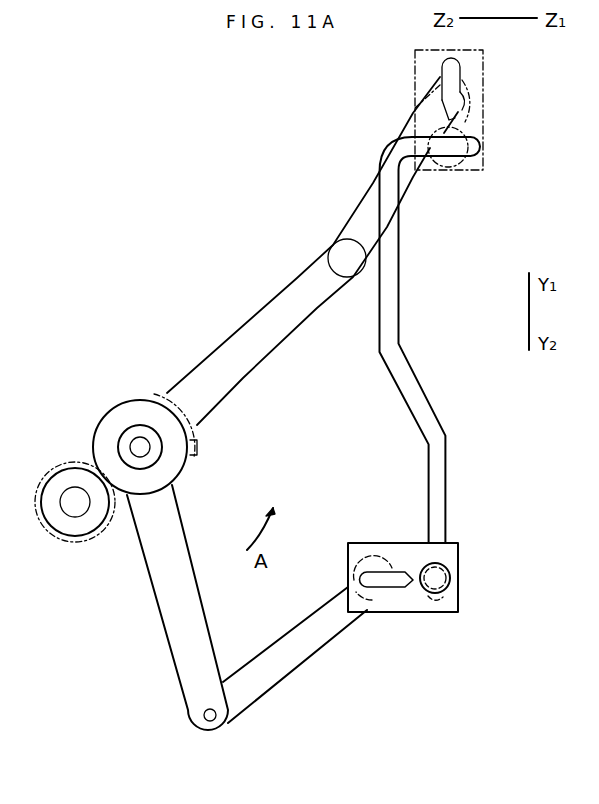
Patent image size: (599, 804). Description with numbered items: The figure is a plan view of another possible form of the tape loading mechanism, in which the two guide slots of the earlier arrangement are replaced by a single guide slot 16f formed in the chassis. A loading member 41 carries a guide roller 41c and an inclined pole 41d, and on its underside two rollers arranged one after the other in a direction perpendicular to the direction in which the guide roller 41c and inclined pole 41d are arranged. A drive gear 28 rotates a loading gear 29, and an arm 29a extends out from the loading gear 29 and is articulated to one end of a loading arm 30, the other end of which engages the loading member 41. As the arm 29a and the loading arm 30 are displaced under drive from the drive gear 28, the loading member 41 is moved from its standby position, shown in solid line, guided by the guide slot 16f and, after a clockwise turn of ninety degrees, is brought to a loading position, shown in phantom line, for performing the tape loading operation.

The guide slot 16f is at (398, 283).
The loading member 41 is at (483, 83).
The guide roller 41c is at (440, 565).
The inclined pole 41d is at (395, 572).
The arm 29a is at (293, 333).
The loading arm 30 is at (395, 148).
The loading gear 29 is at (190, 472).
The drive gear 28 is at (60, 540).